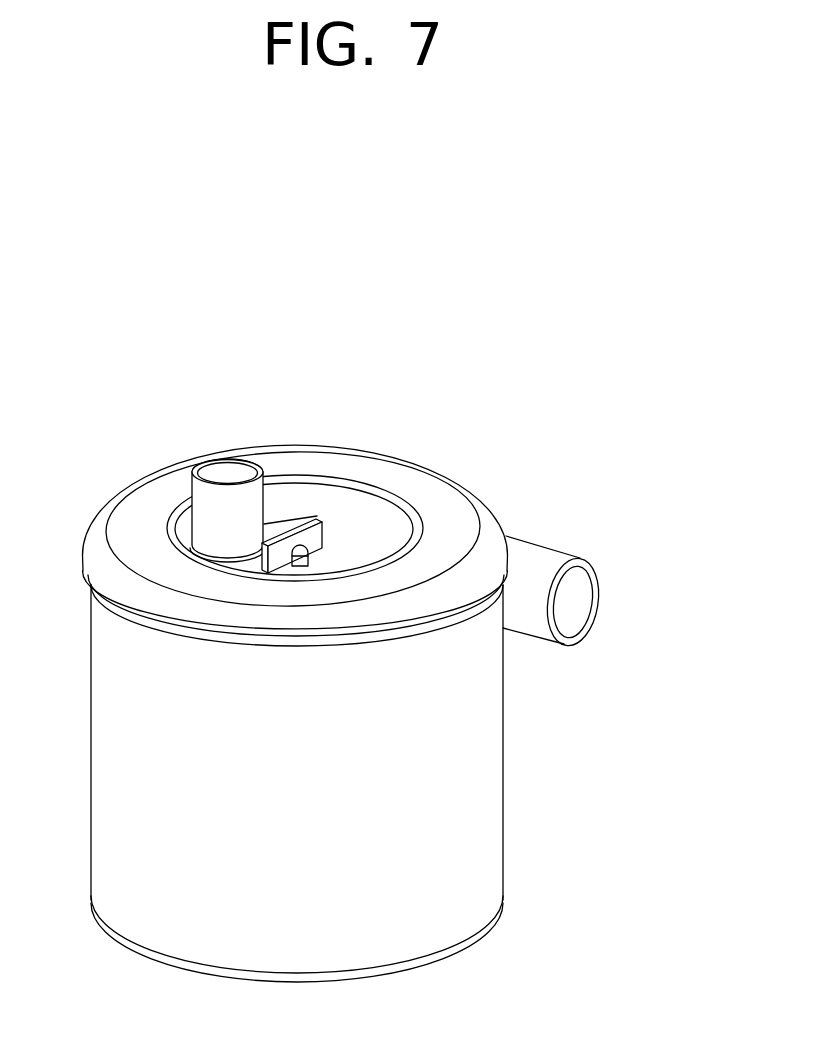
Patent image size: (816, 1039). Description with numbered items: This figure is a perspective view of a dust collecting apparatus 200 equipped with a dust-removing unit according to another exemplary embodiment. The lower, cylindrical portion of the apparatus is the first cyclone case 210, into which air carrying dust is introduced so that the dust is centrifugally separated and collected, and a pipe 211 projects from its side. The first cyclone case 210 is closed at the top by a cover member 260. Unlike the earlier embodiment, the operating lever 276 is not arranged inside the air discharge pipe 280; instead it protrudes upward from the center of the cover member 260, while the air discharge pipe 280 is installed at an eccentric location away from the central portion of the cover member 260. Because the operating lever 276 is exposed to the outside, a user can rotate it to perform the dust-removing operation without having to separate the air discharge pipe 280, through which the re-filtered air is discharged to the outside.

The dust collecting apparatus 200 is at (628, 237).
The first cyclone case 210 is at (503, 802).
The inlet pipe 211 is at (547, 546).
The cover member 260 is at (118, 483).
The operating lever 276 is at (305, 521).
The air discharge pipe 280 is at (243, 502).